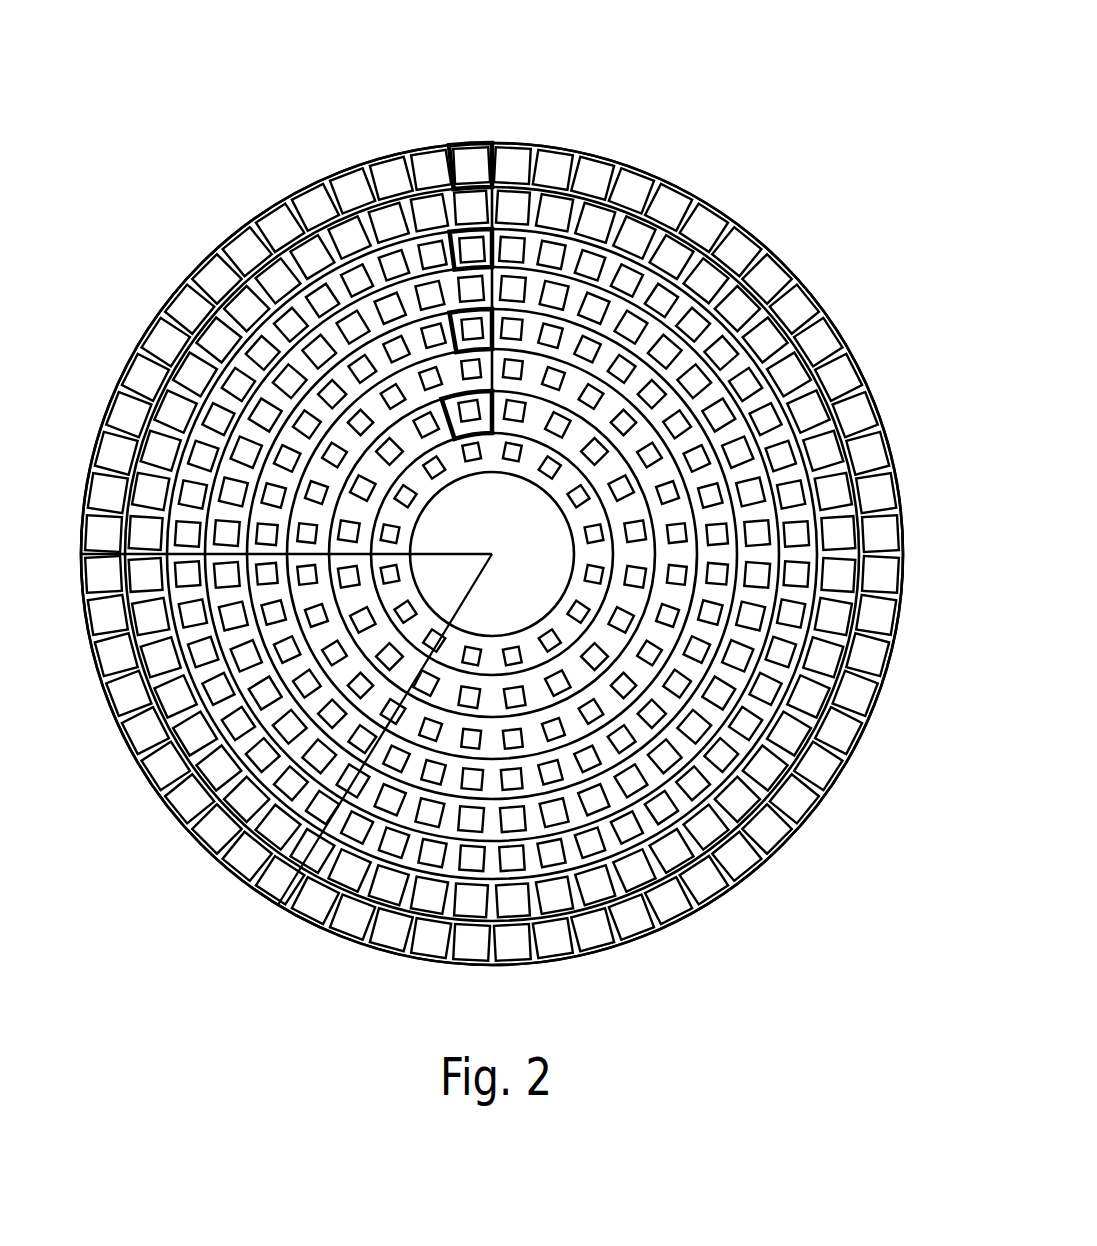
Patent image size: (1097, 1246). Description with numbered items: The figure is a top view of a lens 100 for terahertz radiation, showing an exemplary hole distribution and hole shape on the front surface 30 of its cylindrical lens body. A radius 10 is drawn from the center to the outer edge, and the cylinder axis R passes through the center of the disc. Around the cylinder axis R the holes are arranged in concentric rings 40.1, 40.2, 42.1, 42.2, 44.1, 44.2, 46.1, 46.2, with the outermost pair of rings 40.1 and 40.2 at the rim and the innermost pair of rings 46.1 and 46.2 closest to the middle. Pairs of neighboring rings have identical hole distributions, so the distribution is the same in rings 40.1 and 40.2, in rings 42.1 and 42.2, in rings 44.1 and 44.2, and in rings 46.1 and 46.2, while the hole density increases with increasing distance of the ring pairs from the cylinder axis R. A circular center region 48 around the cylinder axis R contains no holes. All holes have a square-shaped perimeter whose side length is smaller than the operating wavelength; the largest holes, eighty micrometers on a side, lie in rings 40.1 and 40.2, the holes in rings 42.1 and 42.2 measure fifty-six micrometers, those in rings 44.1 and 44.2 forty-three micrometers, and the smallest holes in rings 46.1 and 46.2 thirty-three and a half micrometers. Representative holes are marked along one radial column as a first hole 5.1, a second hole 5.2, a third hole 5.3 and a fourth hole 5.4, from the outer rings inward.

The lens for terahertz radiation 100 is at (157, 110).
The radius 10 is at (80, 553).
The front surface 30 is at (167, 807).
The center region 48 is at (533, 585).
The cylinder axis R is at (278, 905).
The ring 40.1 is at (618, 172).
The ring 40.2 is at (535, 200).
The ring 42.1 is at (652, 285).
The ring 42.2 is at (685, 363).
The ring 44.1 is at (697, 438).
The ring 44.2 is at (673, 473).
The ring 46.1 is at (637, 502).
The ring 46.2 is at (603, 559).
The first hole 5.1 is at (470, 162).
The second hole 5.2 is at (478, 250).
The third hole 5.3 is at (470, 330).
The fourth hole 5.4 is at (470, 412).